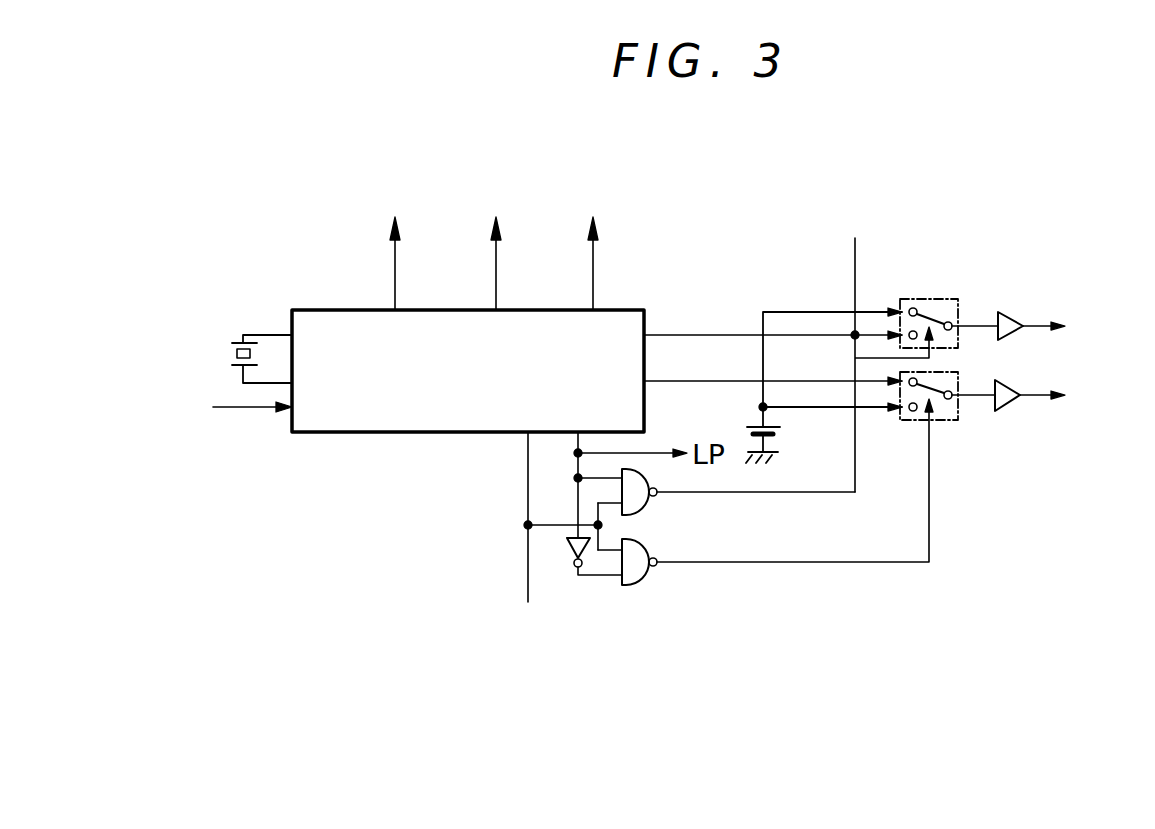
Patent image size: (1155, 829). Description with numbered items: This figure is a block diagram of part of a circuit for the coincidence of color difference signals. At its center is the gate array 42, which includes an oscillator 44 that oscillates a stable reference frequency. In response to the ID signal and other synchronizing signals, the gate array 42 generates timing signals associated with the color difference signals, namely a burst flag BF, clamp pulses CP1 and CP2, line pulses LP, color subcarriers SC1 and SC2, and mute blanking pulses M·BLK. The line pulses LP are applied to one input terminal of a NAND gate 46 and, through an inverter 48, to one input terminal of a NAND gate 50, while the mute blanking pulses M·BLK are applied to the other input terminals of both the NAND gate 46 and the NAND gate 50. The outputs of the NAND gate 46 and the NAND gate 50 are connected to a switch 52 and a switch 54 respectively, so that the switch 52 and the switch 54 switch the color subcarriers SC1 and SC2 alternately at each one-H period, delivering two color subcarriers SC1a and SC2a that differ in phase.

The gate array 42 is at (378, 434).
The oscillator 44 is at (232, 351).
The NAND gate 46 is at (648, 507).
The inverter 48 is at (569, 552).
The NAND gate 50 is at (650, 582).
The switch 52 is at (915, 297).
The switch 54 is at (947, 421).